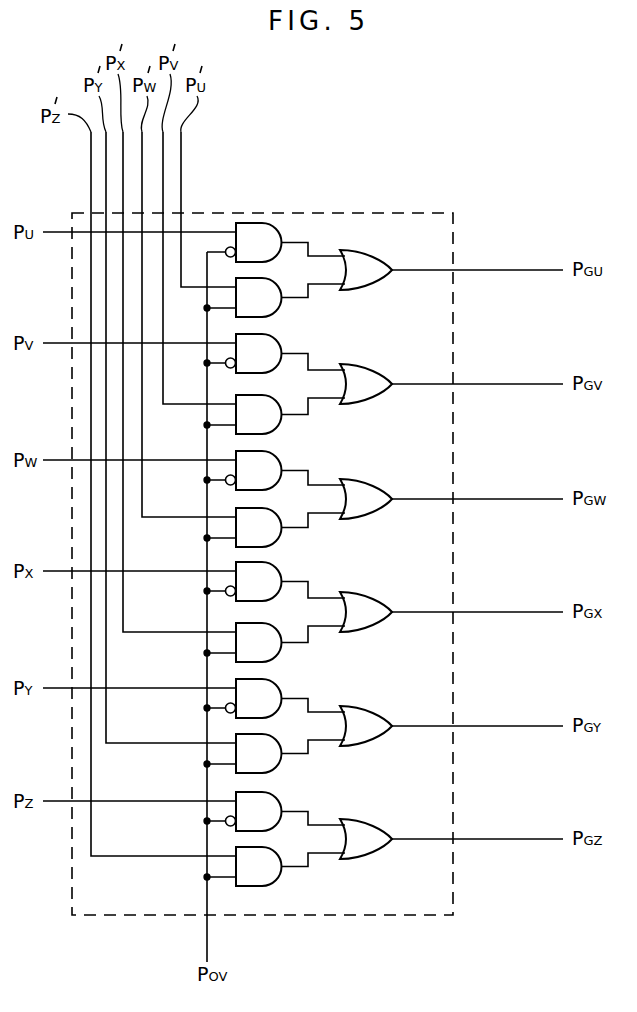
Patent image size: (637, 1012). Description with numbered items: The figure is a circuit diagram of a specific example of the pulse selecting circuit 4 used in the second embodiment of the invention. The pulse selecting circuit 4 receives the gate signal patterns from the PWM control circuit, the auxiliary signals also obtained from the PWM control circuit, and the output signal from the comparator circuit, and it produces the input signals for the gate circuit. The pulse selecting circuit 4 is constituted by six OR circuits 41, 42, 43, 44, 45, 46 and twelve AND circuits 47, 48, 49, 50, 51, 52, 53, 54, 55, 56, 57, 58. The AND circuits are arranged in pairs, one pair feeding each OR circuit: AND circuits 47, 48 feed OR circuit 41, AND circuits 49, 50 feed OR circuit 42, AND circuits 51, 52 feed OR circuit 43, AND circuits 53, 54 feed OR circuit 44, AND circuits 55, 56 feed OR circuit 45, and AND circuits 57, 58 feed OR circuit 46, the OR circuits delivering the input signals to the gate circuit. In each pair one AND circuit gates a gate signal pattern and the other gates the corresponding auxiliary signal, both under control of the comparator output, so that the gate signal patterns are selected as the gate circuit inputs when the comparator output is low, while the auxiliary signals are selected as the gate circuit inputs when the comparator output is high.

The pulse selecting circuit 4 is at (433, 212).
The OR circuit 41 is at (386, 258).
The OR circuit 42 is at (386, 372).
The OR circuit 43 is at (386, 487).
The OR circuit 44 is at (386, 600).
The OR circuit 45 is at (386, 714).
The OR circuit 46 is at (386, 827).
The AND circuit 47 is at (283, 239).
The AND circuit 48 is at (284, 308).
The AND circuit 49 is at (283, 350).
The AND circuit 50 is at (284, 425).
The AND circuit 51 is at (283, 467).
The AND circuit 52 is at (284, 538).
The AND circuit 53 is at (283, 578).
The AND circuit 54 is at (284, 653).
The AND circuit 55 is at (283, 695).
The AND circuit 56 is at (284, 764).
The AND circuit 57 is at (283, 808).
The AND circuit 58 is at (284, 877).